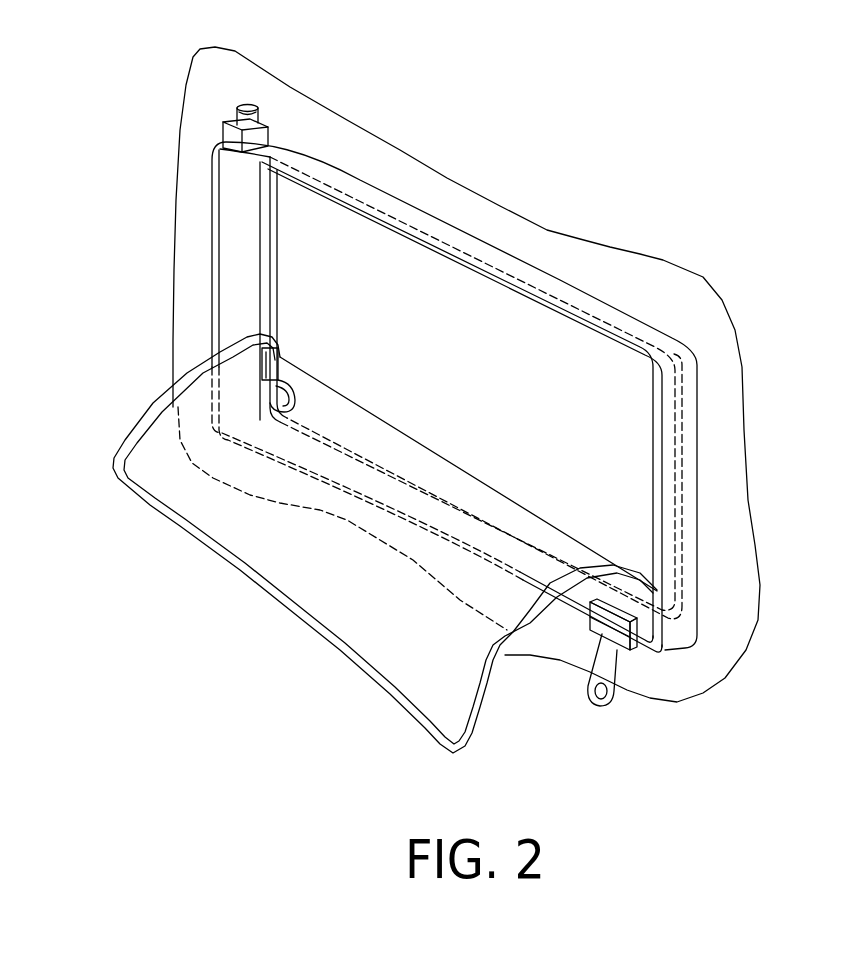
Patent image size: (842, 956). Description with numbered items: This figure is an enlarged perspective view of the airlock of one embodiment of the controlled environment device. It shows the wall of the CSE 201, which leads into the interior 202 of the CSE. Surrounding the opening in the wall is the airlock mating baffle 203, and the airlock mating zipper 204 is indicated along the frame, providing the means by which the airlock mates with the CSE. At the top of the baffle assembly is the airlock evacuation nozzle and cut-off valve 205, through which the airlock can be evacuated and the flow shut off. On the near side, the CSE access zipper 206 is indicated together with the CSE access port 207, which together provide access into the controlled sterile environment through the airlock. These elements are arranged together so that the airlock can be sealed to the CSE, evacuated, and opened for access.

The wall of the CSE 201 is at (675, 297).
The interior of the CSE 202 is at (640, 496).
The airlock mating baffle 203 is at (232, 227).
The airlock mating zipper 204 is at (613, 707).
The airlock evacuation nozzle and cut-off valve 205 is at (248, 104).
The CSE access zipper 206 is at (272, 380).
The CSE access port 207 is at (280, 586).